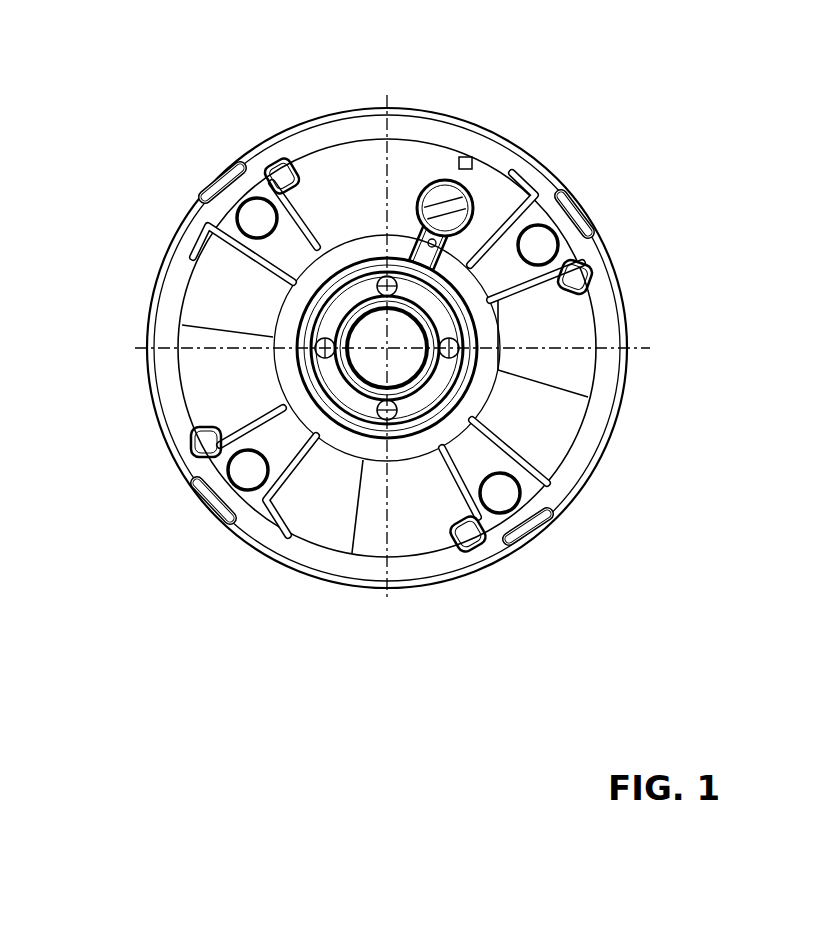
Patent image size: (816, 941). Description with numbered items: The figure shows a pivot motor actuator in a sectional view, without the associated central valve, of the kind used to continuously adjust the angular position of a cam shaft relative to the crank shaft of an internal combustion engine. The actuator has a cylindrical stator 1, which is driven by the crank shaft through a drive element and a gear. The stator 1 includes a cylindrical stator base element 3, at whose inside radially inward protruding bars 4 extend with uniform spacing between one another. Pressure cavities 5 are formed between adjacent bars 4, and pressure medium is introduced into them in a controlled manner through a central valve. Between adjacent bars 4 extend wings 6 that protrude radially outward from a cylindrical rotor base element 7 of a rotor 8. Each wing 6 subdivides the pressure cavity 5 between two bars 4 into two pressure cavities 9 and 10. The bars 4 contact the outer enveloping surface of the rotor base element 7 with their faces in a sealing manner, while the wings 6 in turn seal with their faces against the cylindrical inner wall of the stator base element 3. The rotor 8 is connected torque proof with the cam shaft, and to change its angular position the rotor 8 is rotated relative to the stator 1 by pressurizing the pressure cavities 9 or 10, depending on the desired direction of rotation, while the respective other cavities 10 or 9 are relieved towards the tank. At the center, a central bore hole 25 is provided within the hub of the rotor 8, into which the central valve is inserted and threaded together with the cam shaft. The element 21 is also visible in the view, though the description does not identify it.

The stator 1 is at (636, 247).
The stator base element 3 is at (387, 298).
The bars 4 is at (542, 498).
The pressure cavities 5 is at (156, 382).
The wings 6 is at (171, 252).
The rotor base element 7 is at (335, 317).
The rotor 8 is at (552, 417).
The pressure cavity 9 is at (387, 279).
The pressure cavity 10 is at (619, 168).
The key element 21 is at (514, 157).
The central bore hole 25 is at (250, 439).